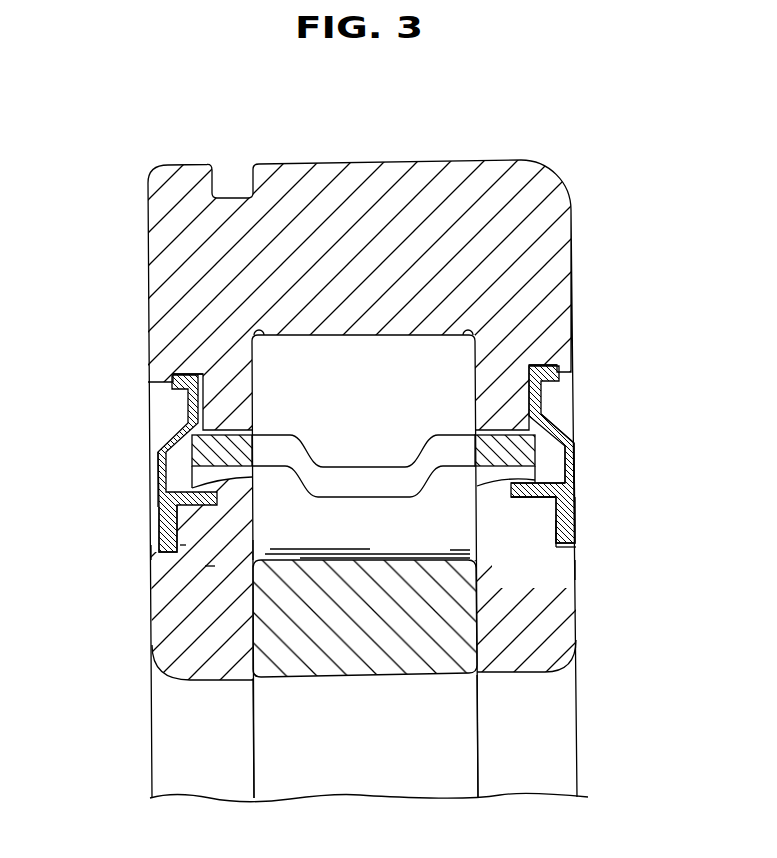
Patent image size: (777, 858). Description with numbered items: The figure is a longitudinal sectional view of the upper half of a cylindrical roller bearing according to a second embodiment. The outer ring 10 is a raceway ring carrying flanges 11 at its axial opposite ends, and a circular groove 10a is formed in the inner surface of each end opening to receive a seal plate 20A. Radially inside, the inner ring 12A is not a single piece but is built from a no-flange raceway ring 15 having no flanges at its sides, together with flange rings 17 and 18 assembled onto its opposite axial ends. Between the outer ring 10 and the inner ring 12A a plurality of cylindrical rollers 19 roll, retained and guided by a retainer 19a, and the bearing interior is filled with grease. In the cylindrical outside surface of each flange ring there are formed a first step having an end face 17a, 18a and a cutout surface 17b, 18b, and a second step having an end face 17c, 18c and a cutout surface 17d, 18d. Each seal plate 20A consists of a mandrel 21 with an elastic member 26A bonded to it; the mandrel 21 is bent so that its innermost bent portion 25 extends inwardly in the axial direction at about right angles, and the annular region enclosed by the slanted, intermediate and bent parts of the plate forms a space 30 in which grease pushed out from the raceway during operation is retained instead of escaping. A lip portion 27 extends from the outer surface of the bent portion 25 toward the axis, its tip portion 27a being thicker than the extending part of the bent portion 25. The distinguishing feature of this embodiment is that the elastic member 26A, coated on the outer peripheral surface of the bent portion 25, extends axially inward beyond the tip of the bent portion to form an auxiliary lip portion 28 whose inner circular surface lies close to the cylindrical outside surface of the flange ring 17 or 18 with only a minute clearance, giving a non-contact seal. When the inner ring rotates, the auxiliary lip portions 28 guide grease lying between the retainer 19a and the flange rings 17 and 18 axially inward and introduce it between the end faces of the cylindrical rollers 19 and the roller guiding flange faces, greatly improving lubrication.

The outer ring 10 is at (375, 177).
The circular groove 10a is at (175, 376).
The flange 11 is at (222, 413).
The inner ring 12A is at (315, 682).
The no-flange raceway ring 15 is at (400, 667).
The flange ring 17 is at (213, 693).
The end face 17a is at (253, 547).
The cutout surface 17b is at (208, 566).
The end face 17c is at (184, 545).
The cutout surface 17d is at (165, 553).
The flange ring 18 is at (532, 663).
The end face 18a is at (535, 497).
The cutout surface 18b is at (527, 533).
The end face 18c is at (544, 540).
The cutout surface 18d is at (578, 566).
The cylindrical roller 19 is at (413, 347).
The retainer 19a is at (348, 470).
The seal plate 20A is at (156, 437).
The mandrel 21 is at (551, 450).
The bent portion 25 is at (560, 492).
The elastic member 26A is at (573, 470).
The lip portion 27 is at (160, 512).
The tip portion 27a is at (158, 537).
The auxiliary lip portion 28 is at (240, 477).
The space 30 is at (158, 472).